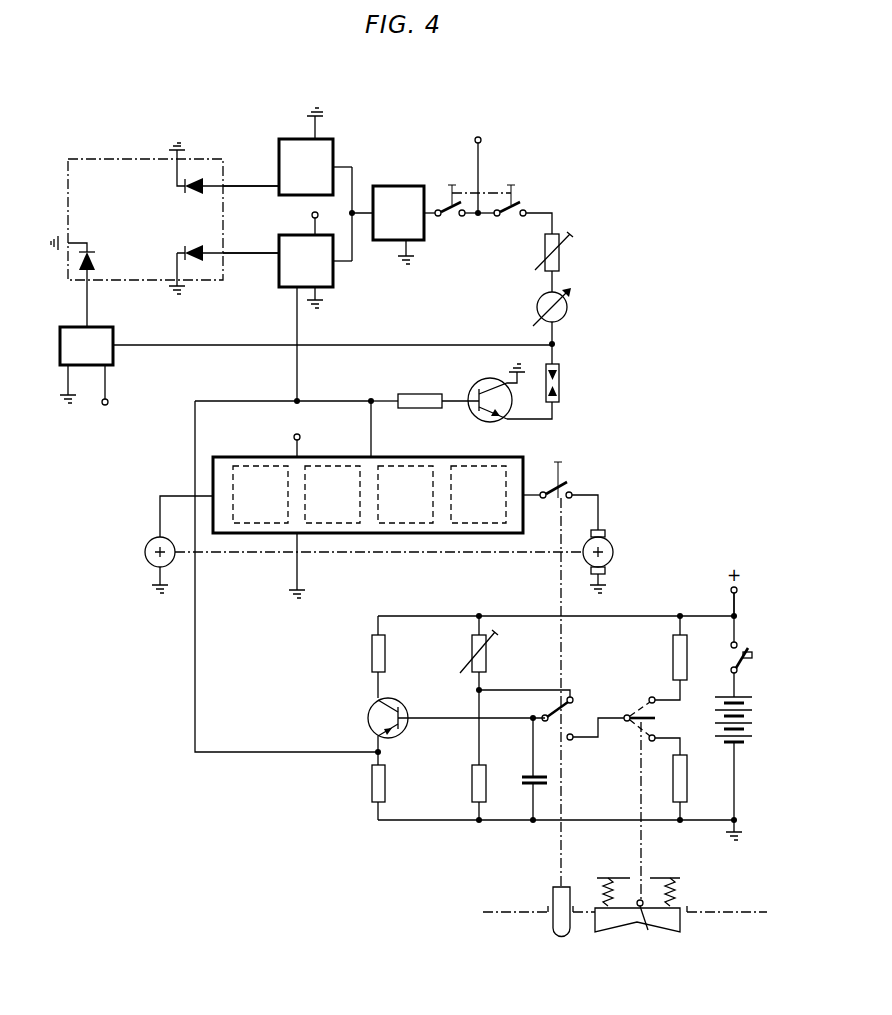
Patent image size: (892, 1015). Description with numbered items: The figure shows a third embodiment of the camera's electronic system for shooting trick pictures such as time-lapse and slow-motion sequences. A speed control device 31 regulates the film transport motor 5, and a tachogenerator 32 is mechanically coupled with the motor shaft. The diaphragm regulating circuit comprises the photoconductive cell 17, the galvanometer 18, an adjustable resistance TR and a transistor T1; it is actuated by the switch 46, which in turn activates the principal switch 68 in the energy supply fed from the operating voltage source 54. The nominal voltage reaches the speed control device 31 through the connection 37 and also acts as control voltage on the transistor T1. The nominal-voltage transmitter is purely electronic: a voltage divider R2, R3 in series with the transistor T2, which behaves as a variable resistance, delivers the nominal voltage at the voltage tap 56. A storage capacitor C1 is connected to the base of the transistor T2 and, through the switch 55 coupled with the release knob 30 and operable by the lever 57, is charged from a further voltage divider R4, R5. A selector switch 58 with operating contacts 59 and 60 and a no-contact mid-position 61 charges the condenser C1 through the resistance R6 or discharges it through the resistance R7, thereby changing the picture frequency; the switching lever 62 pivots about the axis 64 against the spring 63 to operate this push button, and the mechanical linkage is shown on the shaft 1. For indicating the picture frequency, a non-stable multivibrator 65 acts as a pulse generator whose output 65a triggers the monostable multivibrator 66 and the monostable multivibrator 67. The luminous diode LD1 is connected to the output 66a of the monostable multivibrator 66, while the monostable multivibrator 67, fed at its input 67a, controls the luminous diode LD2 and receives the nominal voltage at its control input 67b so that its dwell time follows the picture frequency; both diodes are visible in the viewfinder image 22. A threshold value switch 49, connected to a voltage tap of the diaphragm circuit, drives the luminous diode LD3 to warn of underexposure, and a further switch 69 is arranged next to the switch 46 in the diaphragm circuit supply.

The shaft 1 is at (503, 915).
The film transport motor 5 is at (610, 542).
The photoconductive cell 17 is at (561, 386).
The galvanometer 18 is at (569, 306).
The viewfinder image 22 is at (98, 160).
The release knob 30 is at (565, 491).
The speed control device 31 is at (344, 457).
The tachogenerator 32 is at (144, 548).
The connection 37 is at (377, 457).
The switch 46 is at (523, 214).
The threshold value switch 49 is at (96, 358).
The operating voltage source 54 is at (752, 718).
The switch 55 is at (533, 715).
The voltage tap 56 is at (315, 753).
The lever 57 is at (560, 920).
The selector switch 58 is at (600, 736).
The operating contact 59 is at (659, 688).
The operating contact 60 is at (660, 811).
The no contact mid-position 61 is at (657, 718).
The switching lever 62 is at (621, 920).
The spring 63 is at (676, 893).
The axis 64 is at (648, 910).
The non-stable multivibrator 65 is at (407, 226).
The output 65a is at (353, 209).
The monostable multivibrator 66 is at (315, 179).
The output 66a is at (278, 185).
The monostable multivibrator 67 is at (315, 273).
The input line 67a is at (278, 266).
The control input 67b is at (291, 306).
The switch 68 is at (746, 651).
The switch 69 is at (473, 179).
The luminous diode LD1 is at (195, 179).
The luminous diode LD2 is at (192, 272).
The luminous diode LD3 is at (80, 262).
The adjustable resistance TR is at (563, 262).
The transistor T1 is at (482, 382).
The transistor T2 is at (368, 718).
The resistance R2 is at (385, 654).
The resistance R3 is at (385, 786).
The resistance R4 is at (488, 690).
The resistance R5 is at (486, 786).
The resistance R6 is at (687, 657).
The resistance R7 is at (687, 780).
The storage capacitor C1 is at (552, 782).